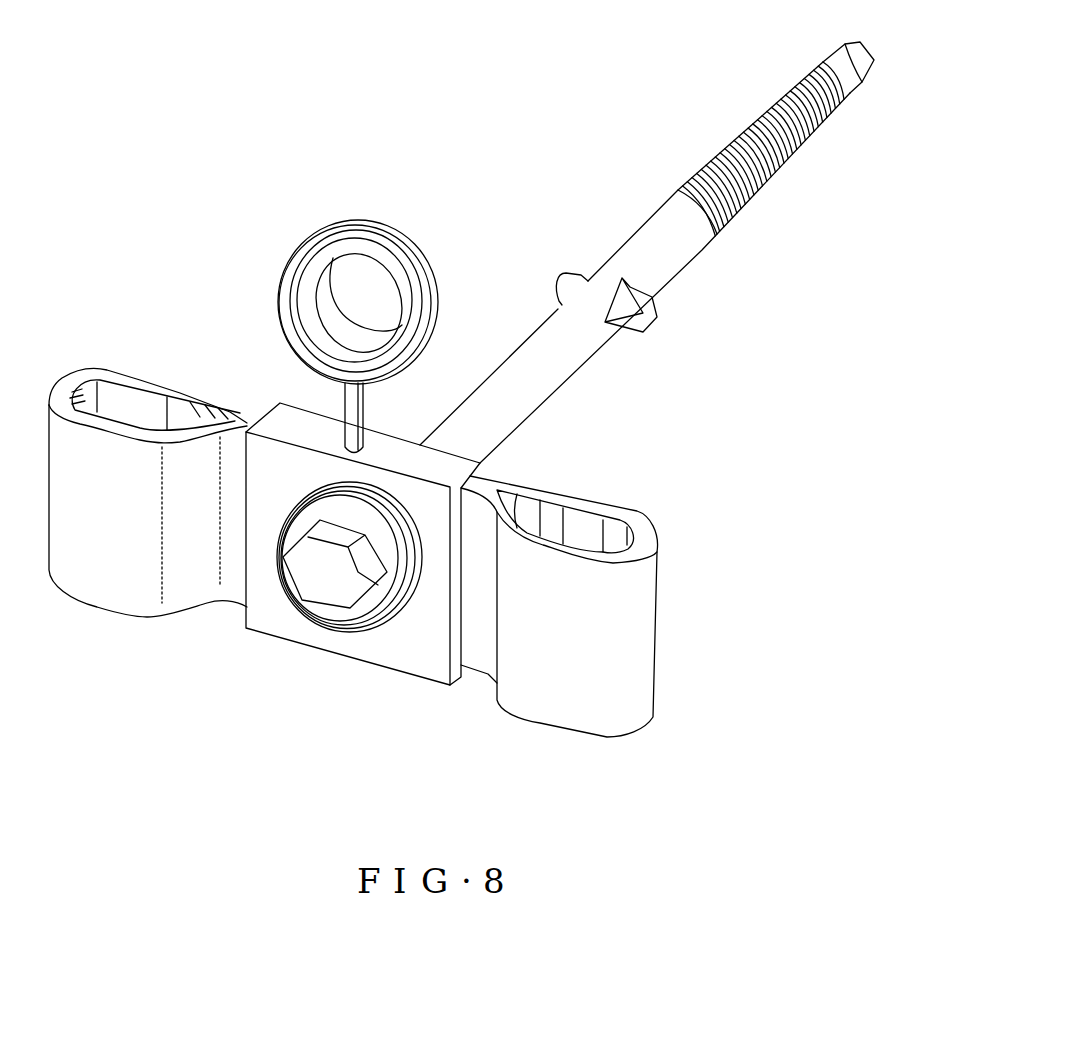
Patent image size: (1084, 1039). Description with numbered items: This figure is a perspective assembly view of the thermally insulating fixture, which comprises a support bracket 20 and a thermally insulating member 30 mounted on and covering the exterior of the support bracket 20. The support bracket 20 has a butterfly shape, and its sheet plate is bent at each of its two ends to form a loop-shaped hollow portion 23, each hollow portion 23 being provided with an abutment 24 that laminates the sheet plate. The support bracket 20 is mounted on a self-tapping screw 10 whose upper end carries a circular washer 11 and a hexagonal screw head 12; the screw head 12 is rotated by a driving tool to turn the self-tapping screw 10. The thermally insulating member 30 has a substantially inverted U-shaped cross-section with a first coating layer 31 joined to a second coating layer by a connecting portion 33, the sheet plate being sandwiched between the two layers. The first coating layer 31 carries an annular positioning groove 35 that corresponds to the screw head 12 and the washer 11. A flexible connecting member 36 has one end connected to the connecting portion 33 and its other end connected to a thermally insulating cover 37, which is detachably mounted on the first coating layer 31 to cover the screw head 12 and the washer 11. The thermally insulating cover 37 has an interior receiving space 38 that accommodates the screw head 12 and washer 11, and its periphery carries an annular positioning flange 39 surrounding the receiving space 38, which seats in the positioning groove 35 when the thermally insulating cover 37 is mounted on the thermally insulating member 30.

The self-tapping screw 10 is at (611, 268).
The washer 11 is at (373, 617).
The screw head 12 is at (337, 597).
The support bracket 20 is at (353, 516).
The hollow portion 23 is at (114, 418).
The abutment 24 is at (248, 412).
The thermally insulating member 30 is at (343, 271).
The first coating layer 31 is at (270, 605).
The connecting portion 33 is at (410, 457).
The positioning groove 35 is at (400, 627).
The connecting member 36 is at (345, 403).
The thermally insulating cover 37 is at (420, 252).
The receiving space 38 is at (320, 308).
The positioning flange 39 is at (290, 262).